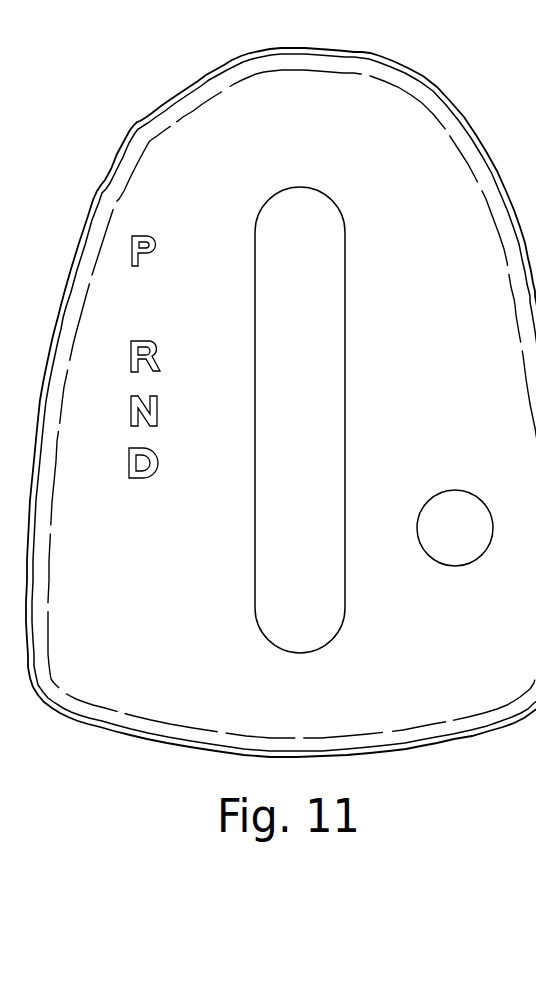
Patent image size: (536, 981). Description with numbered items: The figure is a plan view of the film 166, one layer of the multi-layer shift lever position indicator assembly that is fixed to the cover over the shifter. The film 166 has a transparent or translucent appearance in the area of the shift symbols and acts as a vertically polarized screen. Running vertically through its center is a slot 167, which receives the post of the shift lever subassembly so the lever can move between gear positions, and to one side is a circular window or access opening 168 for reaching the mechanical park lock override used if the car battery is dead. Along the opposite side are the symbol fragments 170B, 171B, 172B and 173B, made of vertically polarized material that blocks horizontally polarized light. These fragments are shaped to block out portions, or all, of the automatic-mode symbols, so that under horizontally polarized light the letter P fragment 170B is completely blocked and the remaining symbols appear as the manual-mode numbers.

The film 166 is at (377, 66).
The slot 167 is at (317, 600).
The circular window or access opening 168 is at (452, 510).
The symbol fragment 170B is at (157, 250).
The symbol fragment 171B is at (160, 362).
The symbol fragment 172B is at (158, 418).
The symbol fragment 173B is at (158, 468).